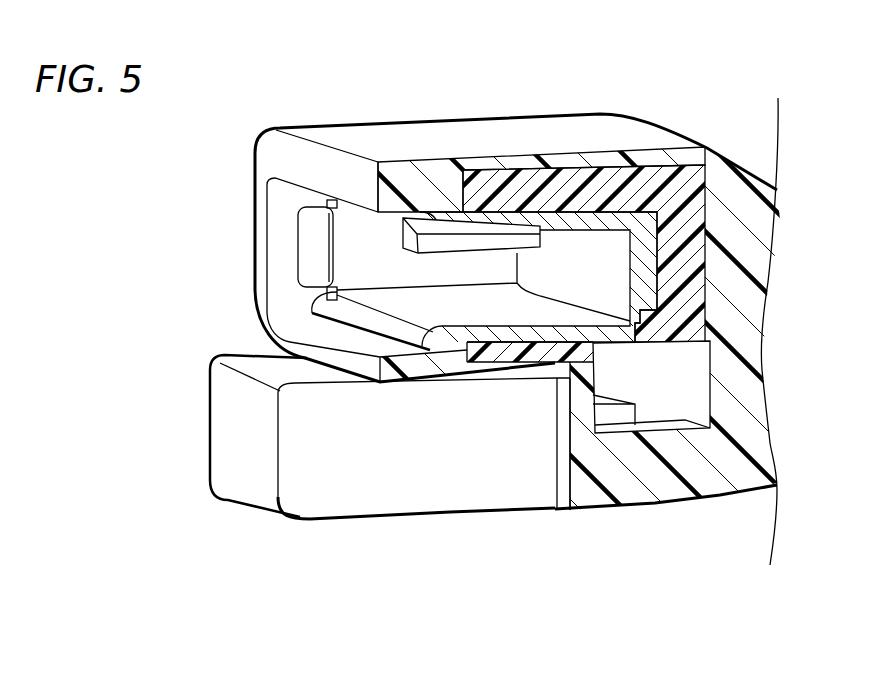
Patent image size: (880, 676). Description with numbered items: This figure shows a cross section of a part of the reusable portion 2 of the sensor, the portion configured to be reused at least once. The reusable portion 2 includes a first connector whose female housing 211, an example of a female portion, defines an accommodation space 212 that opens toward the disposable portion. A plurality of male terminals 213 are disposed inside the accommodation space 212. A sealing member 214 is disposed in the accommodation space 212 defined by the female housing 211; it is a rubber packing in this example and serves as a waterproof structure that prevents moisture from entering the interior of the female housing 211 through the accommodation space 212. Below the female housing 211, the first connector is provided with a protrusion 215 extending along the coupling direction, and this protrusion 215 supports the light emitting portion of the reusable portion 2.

The reusable portion 2 is at (311, 104).
The female housing 211 is at (565, 120).
The accommodation space 212 is at (300, 302).
The male terminals 213 is at (398, 216).
The sealing member 214 is at (683, 170).
The protrusion 215 is at (392, 487).